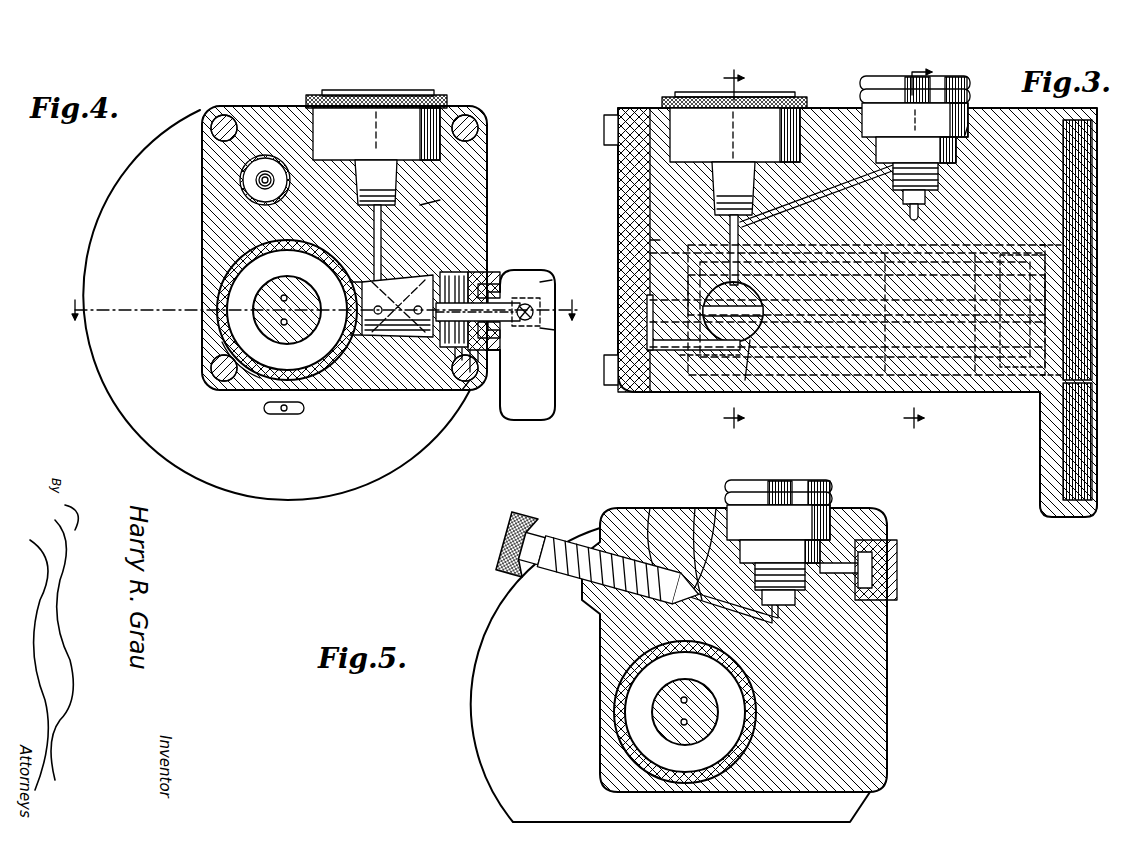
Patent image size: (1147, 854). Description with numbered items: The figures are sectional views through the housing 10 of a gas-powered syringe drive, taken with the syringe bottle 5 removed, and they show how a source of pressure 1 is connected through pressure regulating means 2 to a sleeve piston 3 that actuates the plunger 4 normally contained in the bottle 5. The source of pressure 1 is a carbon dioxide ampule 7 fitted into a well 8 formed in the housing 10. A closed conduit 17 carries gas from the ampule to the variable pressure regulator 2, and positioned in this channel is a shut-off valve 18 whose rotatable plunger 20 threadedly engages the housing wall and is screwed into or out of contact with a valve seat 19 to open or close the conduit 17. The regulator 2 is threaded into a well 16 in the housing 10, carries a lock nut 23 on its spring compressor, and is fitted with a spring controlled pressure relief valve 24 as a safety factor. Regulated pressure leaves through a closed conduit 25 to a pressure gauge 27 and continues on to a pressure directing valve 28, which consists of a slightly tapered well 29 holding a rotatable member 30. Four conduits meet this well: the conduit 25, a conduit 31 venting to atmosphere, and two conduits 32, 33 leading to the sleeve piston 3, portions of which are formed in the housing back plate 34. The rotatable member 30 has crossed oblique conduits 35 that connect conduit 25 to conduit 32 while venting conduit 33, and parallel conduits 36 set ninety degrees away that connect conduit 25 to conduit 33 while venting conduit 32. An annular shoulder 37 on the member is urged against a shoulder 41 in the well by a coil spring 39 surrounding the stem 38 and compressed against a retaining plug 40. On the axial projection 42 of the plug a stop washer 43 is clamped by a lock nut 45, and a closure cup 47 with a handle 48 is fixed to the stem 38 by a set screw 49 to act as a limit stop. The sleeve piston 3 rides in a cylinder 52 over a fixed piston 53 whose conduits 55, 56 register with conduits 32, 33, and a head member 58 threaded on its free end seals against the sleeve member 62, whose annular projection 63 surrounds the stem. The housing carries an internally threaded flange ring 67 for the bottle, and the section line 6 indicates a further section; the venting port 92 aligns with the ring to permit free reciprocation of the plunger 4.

In FIG. 4, the source of pressure 1 is at (250, 178).
In FIG. 3, the pressure regulating means 2 is at (968, 120).
In FIG. 5, the pressure regulating means 2 is at (762, 520).
In FIG. 4, the sleeve piston 3 is at (235, 327).
In FIG. 5, the sleeve piston 3 is at (640, 690).
In FIG. 3, the plunger 4 is at (734, 250).
In FIG. 3, the syringe bottle 5 is at (927, 250).
In FIG. 4, the section line 6- 6 is at (318, 312).
In FIG. 4, the carbon dioxide ampule 7 is at (245, 188).
In FIG. 4, the well 8 is at (250, 198).
In FIG. 4, the housing 10 is at (208, 258).
In FIG. 3, the housing 10 is at (660, 193).
In FIG. 5, the housing 10 is at (887, 648).
In FIG. 3, the well 16 is at (972, 128).
In FIG. 3, the conduit 17 is at (920, 205).
In FIG. 5, the conduit 17 is at (716, 507).
In FIG. 5, the shut-off valve 18 is at (654, 510).
In FIG. 5, the valve seat 19 is at (693, 510).
In FIG. 5, the rotatable plunger 20 is at (622, 512).
In FIG. 3, the lock nut 23 is at (958, 92).
In FIG. 5, the lock nut 23 is at (830, 488).
In FIG. 5, the pressure relief valve 24 is at (892, 545).
In FIG. 4, the closed conduit 25 is at (440, 200).
In FIG. 3, the closed conduit 25 is at (650, 226).
In FIG. 4, the pressure gauge 27 is at (376, 186).
In FIG. 3, the pressure gauge 27 is at (734, 188).
In FIG. 4, the pressure directing valve 28 is at (410, 340).
In FIG. 4, the well 29 is at (420, 268).
In FIG. 3, the well 29 is at (760, 336).
In FIG. 4, the rotatable member 30 is at (352, 372).
In FIG. 3, the rotatable member 30 is at (768, 352).
In FIG. 4, the conduit 31 is at (486, 282).
In FIG. 4, the conduit 32 is at (428, 345).
In FIG. 3, the conduit 33 is at (664, 370).
In FIG. 3, the housing back plate 34 is at (634, 164).
In FIG. 4, the conduits 35 is at (366, 345).
In FIG. 4, the conduits 36 is at (360, 316).
In FIG. 3, the conduits 36 is at (748, 342).
In FIG. 4, the annular shoulder 37 is at (462, 392).
In FIG. 4, the stem 38 is at (525, 285).
In FIG. 4, the coil spring 39 is at (471, 372).
In FIG. 4, the retaining plug 40 is at (479, 352).
In FIG. 4, the shoulder 41 is at (455, 350).
In FIG. 4, the axial projection 42 is at (552, 336).
In FIG. 4, the stop washer 43 is at (497, 284).
In FIG. 4, the lock nut 45 is at (502, 370).
In FIG. 4, the closure cup 47 is at (548, 286).
In FIG. 4, the handle 48 is at (555, 378).
In FIG. 4, the set screw 49 is at (535, 310).
In FIG. 4, the cylinder 52 is at (258, 380).
In FIG. 5, the cylinder 52 is at (625, 746).
In FIG. 4, the fixed piston 53 is at (298, 336).
In FIG. 3, the fixed piston 53 is at (1092, 252).
In FIG. 5, the fixed piston 53 is at (660, 712).
In FIG. 4, the conduit 55 is at (284, 295).
In FIG. 3, the conduit 55 is at (882, 378).
In FIG. 5, the conduit 55 is at (684, 697).
In FIG. 4, the conduit 56 is at (283, 326).
In FIG. 3, the conduit 56 is at (975, 378).
In FIG. 5, the conduit 56 is at (684, 726).
In FIG. 3, the head member 58 is at (1048, 306).
In FIG. 4, the sleeve member 62 is at (222, 287).
In FIG. 3, the sleeve member 62 is at (1092, 228).
In FIG. 5, the sleeve member 62 is at (630, 668).
In FIG. 3, the annular projection 63 is at (712, 360).
In FIG. 4, the flange ring 67 is at (276, 305).
In FIG. 3, the flange ring 67 is at (1076, 458).
In FIG. 5, the flange ring 67 is at (670, 675).
In FIG. 4, the venting port 92 is at (284, 412).